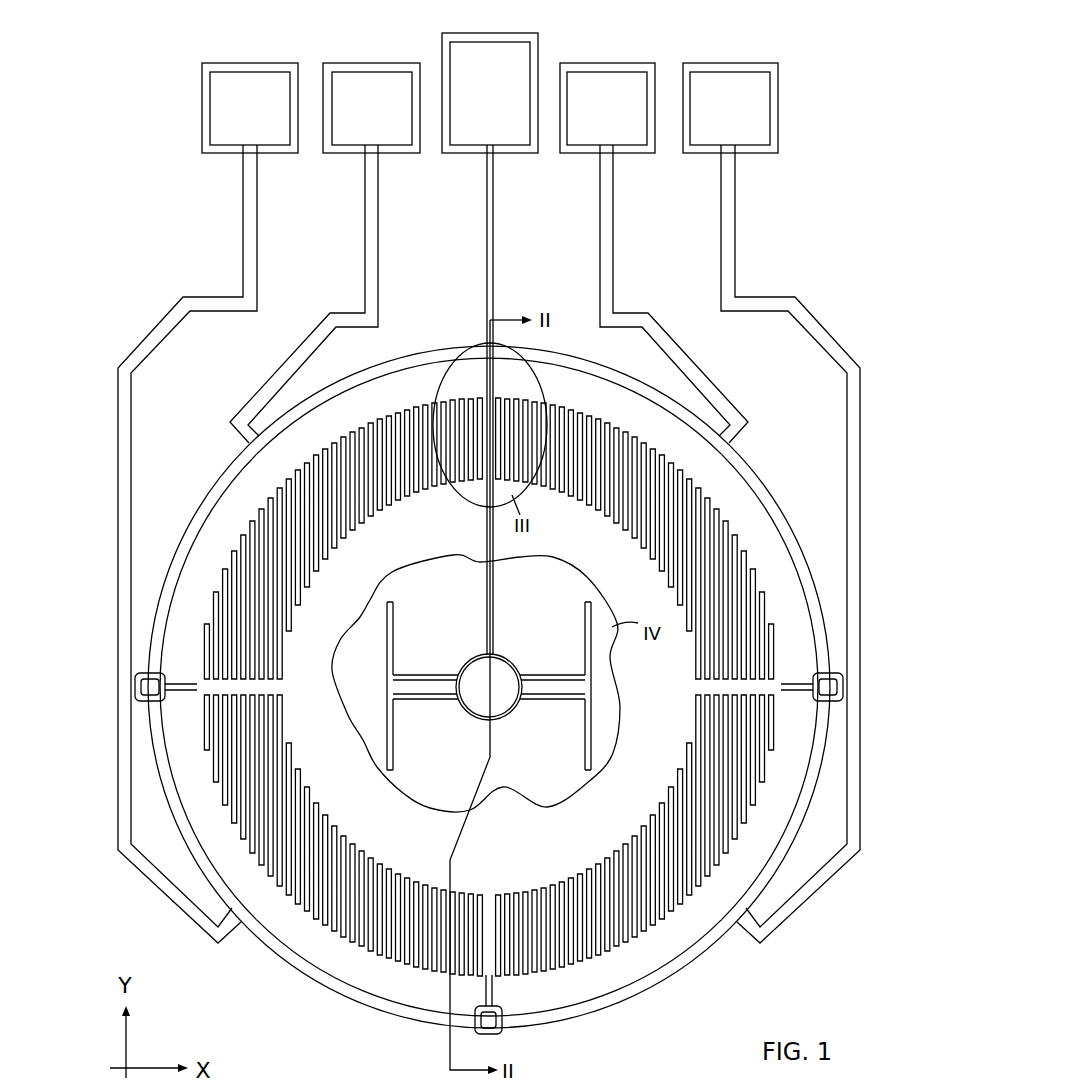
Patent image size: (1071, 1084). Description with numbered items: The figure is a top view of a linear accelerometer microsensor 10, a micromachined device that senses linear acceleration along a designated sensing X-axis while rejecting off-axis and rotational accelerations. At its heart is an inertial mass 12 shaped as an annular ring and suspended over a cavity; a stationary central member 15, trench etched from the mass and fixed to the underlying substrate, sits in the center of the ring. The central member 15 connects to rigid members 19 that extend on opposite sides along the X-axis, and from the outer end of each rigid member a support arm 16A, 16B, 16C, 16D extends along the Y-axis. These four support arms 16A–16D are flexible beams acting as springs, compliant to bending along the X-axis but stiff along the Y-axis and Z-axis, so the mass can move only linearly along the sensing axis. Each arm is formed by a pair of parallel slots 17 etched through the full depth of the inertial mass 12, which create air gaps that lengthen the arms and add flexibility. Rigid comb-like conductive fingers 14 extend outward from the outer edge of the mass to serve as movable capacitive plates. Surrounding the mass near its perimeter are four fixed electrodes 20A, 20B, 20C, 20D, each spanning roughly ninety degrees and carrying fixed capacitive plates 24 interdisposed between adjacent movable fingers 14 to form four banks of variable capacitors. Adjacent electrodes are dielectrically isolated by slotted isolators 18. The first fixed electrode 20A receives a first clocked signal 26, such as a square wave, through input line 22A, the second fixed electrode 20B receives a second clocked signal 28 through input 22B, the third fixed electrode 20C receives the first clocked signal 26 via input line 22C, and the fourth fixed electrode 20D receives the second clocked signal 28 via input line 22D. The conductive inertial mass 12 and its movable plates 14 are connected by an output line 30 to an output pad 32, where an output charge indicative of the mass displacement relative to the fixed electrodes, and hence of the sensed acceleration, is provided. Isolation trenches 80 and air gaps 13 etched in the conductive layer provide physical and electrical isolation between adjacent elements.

The linear accelerometer microsensor 10 is at (812, 92).
The inertial mass 12 is at (409, 554).
The air gap 13 is at (463, 656).
The conductive fingers 14 is at (311, 532).
The central member 15 is at (505, 660).
The support arm 16A is at (392, 606).
The support arm 16B is at (585, 618).
The support arm 16C is at (590, 742).
The support arm 16D is at (393, 757).
The slots 17 is at (395, 663).
The isolator 18 is at (137, 684).
The rigid members 19 is at (417, 691).
The first fixed electrode 20A is at (233, 493).
The second fixed electrode 20B is at (758, 482).
The third fixed electrode 20C is at (660, 960).
The fourth fixed electrode 20D is at (302, 955).
The clocked input line 22A is at (283, 372).
The clocked input 22B is at (695, 368).
The input line 22C is at (822, 882).
The input line 22D is at (156, 882).
The fixed capacitive plates 24 is at (314, 455).
The clocked signal CLKPB 26 is at (366, 62).
The clocked signal CLKP 28 is at (238, 62).
The output line 30 is at (491, 207).
The output pad 32 is at (462, 33).
The isolation trenches 80 is at (367, 375).